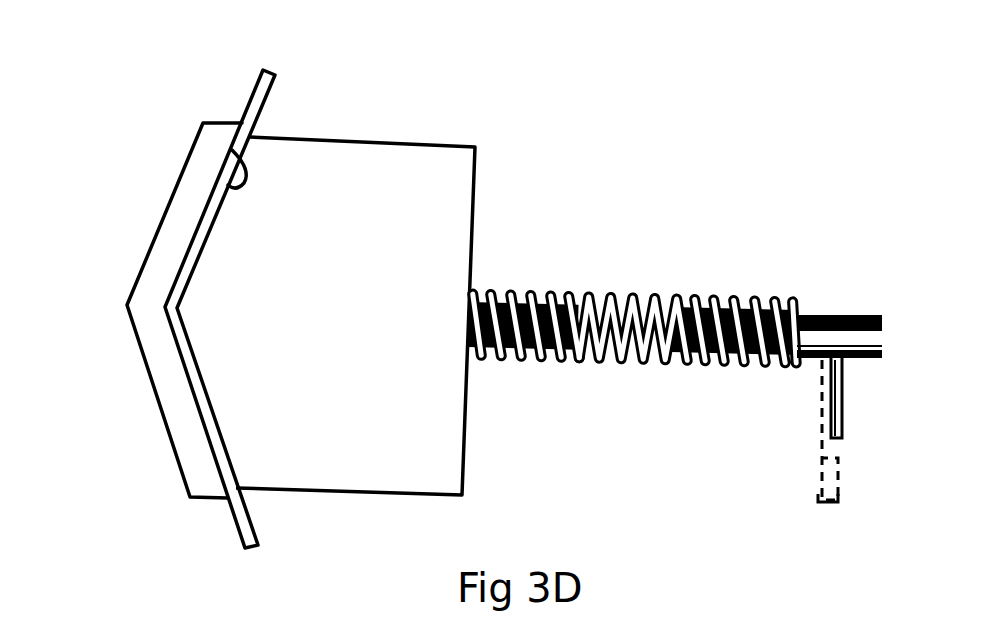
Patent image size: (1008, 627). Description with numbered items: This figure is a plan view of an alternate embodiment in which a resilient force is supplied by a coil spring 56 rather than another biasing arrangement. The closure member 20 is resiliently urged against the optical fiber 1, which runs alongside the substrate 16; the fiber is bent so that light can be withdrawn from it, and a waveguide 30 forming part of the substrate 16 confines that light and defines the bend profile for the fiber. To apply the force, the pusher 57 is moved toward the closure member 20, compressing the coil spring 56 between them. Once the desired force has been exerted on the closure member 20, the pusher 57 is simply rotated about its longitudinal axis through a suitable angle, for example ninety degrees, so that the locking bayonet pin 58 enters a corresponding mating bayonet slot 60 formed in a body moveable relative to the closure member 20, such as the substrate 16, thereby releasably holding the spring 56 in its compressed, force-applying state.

The optical fiber 1 is at (257, 92).
The substrate 16 is at (167, 232).
The closure member 20 is at (291, 235).
The waveguide 30 is at (240, 158).
The coil spring 56 is at (634, 292).
The pusher 57 is at (815, 312).
The locking bayonet pin 58 is at (825, 403).
The mating bayonet slot 60 is at (820, 460).